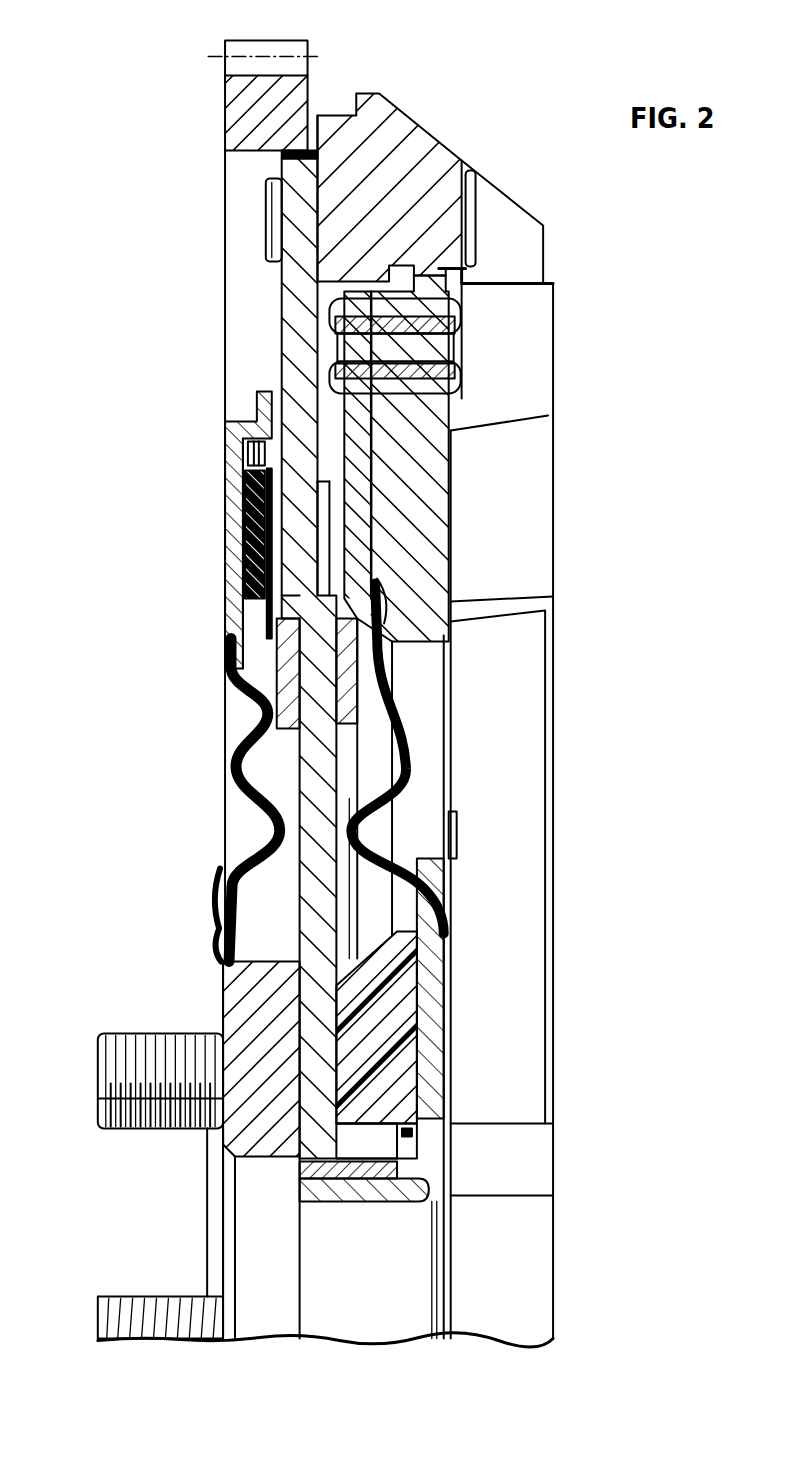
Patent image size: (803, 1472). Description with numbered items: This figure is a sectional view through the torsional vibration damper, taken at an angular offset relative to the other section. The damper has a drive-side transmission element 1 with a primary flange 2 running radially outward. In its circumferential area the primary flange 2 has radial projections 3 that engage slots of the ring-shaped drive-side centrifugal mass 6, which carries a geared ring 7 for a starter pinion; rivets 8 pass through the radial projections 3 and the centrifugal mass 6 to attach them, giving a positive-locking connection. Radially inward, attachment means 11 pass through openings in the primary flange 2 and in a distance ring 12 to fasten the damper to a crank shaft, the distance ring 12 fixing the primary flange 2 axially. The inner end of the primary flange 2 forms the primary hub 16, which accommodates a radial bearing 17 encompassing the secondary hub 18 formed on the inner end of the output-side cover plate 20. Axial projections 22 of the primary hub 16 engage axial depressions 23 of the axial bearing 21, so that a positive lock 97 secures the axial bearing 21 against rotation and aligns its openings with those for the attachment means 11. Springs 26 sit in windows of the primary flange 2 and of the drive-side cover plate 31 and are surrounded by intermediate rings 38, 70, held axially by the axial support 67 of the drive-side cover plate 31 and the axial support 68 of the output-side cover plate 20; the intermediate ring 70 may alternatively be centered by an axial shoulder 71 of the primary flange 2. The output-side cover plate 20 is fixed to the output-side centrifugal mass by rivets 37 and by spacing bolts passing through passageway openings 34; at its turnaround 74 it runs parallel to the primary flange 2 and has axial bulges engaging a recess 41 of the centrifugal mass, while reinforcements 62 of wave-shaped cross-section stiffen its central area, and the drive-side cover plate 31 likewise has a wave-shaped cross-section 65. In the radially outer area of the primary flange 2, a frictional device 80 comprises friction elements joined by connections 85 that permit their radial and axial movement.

The drive-side transmission element 1 is at (205, 132).
The primary flange 2 is at (290, 300).
The radial projections 3 is at (300, 168).
The drive-side centrifugal mass 6 is at (400, 147).
The geared ring 7 is at (232, 77).
The rivets 8 is at (270, 237).
The attachment means 11 is at (100, 1060).
The distance ring 12 is at (240, 995).
The primary hub 16 is at (300, 1175).
The radial bearing 17 is at (325, 1198).
The secondary hub 18 is at (400, 1195).
The output-side cover plate 20 is at (385, 737).
The axial bearing 21 is at (400, 972).
The axial projections 22 is at (405, 1132).
The axial depressions 23 is at (432, 1198).
The springs 26 is at (447, 850).
The drive-side cover plate 31 is at (250, 706).
The passageway openings 34 is at (420, 372).
The rivets 37 is at (455, 318).
The intermediate ring 38 is at (355, 668).
The recess 41 is at (378, 595).
The reinforcements 62 is at (400, 805).
The wave-shaped cross-section 65 is at (236, 800).
The axial support 67 is at (262, 745).
The axial support 68 is at (380, 690).
The intermediate ring 70 is at (286, 655).
The axial shoulder 71 is at (300, 605).
The turnaround 74 is at (470, 615).
The frictional device 80 is at (226, 486).
The connections 85 is at (255, 520).
The positive lock 97 is at (480, 1165).